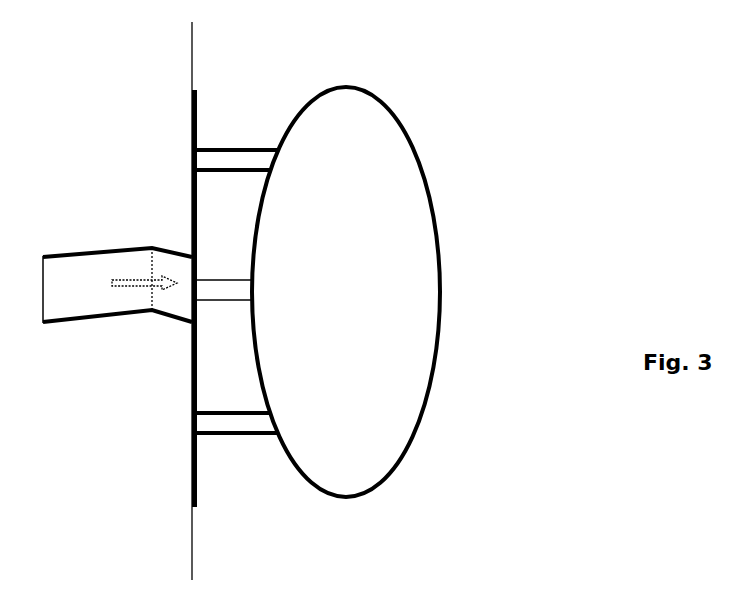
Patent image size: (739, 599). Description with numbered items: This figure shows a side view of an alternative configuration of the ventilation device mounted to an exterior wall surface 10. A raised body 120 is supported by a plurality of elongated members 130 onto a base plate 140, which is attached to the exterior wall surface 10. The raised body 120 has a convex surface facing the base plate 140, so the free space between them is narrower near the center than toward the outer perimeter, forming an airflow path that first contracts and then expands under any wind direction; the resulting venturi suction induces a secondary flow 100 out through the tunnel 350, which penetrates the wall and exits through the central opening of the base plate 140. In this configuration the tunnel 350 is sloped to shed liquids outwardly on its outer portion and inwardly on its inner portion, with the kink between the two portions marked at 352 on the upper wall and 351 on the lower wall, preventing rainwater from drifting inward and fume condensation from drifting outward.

The exterior wall surface 10 is at (197, 52).
The secondary flow 100 is at (140, 290).
The raised body 120 is at (346, 292).
The elongated members 130 is at (241, 145).
The base plate 140 is at (198, 466).
The tunnel 350 is at (117, 285).
The lower duct section 351 is at (152, 313).
The upper duct section 352 is at (153, 247).